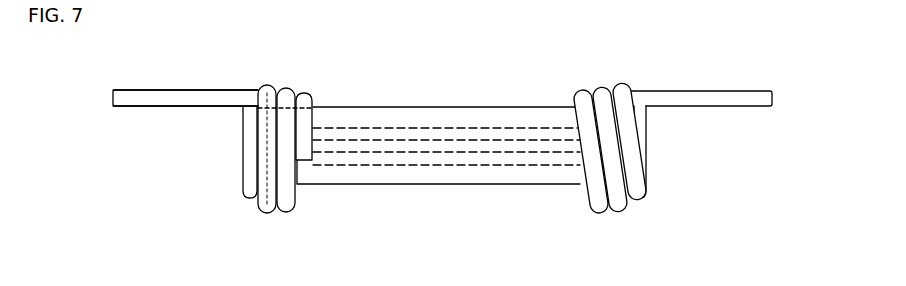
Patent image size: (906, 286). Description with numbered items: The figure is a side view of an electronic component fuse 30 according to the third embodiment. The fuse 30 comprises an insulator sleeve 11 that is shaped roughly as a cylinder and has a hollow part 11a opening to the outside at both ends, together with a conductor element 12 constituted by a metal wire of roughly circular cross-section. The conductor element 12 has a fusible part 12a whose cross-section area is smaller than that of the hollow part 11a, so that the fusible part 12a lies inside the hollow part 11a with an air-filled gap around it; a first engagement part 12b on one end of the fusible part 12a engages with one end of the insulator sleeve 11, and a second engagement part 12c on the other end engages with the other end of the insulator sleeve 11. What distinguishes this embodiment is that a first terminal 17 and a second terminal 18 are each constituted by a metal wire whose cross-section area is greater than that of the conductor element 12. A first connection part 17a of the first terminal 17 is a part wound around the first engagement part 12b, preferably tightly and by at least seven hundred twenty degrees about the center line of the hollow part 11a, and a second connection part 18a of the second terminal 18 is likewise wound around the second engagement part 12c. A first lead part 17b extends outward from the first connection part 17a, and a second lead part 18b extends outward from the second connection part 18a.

The electronic component fuse 30 is at (140, 85).
The insulator sleeve 11 is at (419, 121).
The hollow part 11a is at (407, 130).
The conductor element 12 is at (443, 124).
The fusible part 12a is at (512, 130).
The first engagement part 12b is at (270, 86).
The second engagement part 12c is at (465, 106).
The first terminal 17 is at (195, 151).
The first connection part 17a is at (264, 214).
The first lead part 17b is at (176, 95).
The second terminal 18 is at (690, 152).
The second connection part 18a is at (620, 212).
The second lead part 18b is at (712, 98).